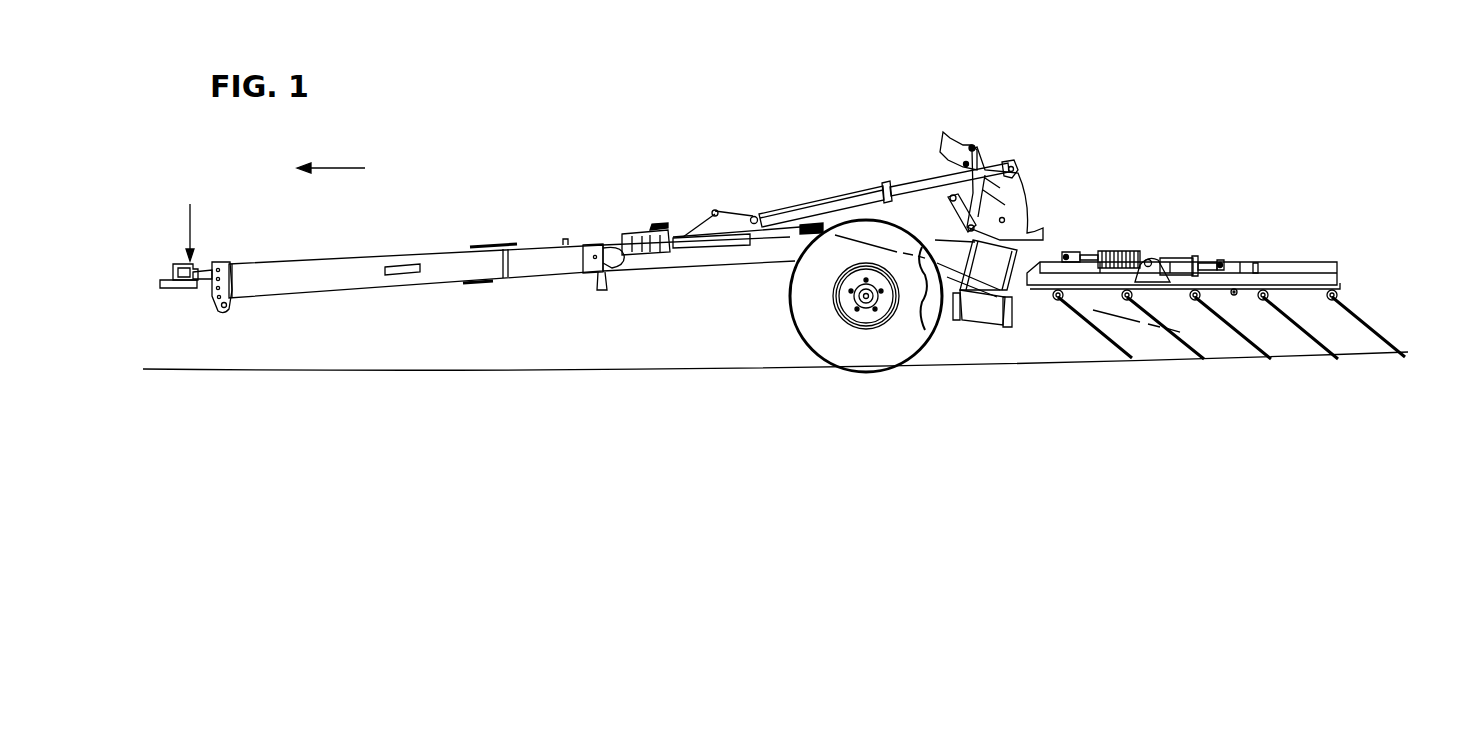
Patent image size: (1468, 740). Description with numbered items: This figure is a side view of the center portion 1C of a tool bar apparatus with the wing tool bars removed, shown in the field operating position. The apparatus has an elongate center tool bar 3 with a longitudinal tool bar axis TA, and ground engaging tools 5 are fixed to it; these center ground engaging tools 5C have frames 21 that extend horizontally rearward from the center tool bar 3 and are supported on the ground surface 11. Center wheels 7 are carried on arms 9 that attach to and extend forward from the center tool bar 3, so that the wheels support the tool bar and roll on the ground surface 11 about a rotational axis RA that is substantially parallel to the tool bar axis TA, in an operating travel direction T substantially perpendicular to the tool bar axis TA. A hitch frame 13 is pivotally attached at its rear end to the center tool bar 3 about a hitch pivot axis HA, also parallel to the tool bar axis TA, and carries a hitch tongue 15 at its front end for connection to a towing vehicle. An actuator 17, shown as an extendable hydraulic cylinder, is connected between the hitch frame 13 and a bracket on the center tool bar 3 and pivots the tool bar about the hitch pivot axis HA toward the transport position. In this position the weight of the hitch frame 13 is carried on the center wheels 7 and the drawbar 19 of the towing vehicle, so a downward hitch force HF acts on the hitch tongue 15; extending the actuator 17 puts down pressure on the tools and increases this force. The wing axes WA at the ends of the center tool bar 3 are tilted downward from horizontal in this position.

The center portion 1C is at (1112, 135).
The center tool bar 3 is at (1002, 240).
The ground engaging tools 5 is at (1259, 246).
The center ground engaging tools 5C is at (1216, 261).
The center wheels 7 is at (805, 306).
The arms 9 is at (966, 320).
The ground surface 11 is at (544, 367).
The hitch frame 13 is at (519, 247).
The hitch tongue 15 is at (205, 263).
The actuator 17 is at (835, 201).
The drawbar 19 is at (184, 288).
The frames 21 is at (1293, 268).
The hitch force HF is at (210, 217).
The hitch pivot axis HA is at (970, 227).
The tool bar axis TA is at (992, 262).
The rotational axis RA is at (864, 300).
The wing axes WA is at (921, 322).
The operating travel direction T is at (323, 154).